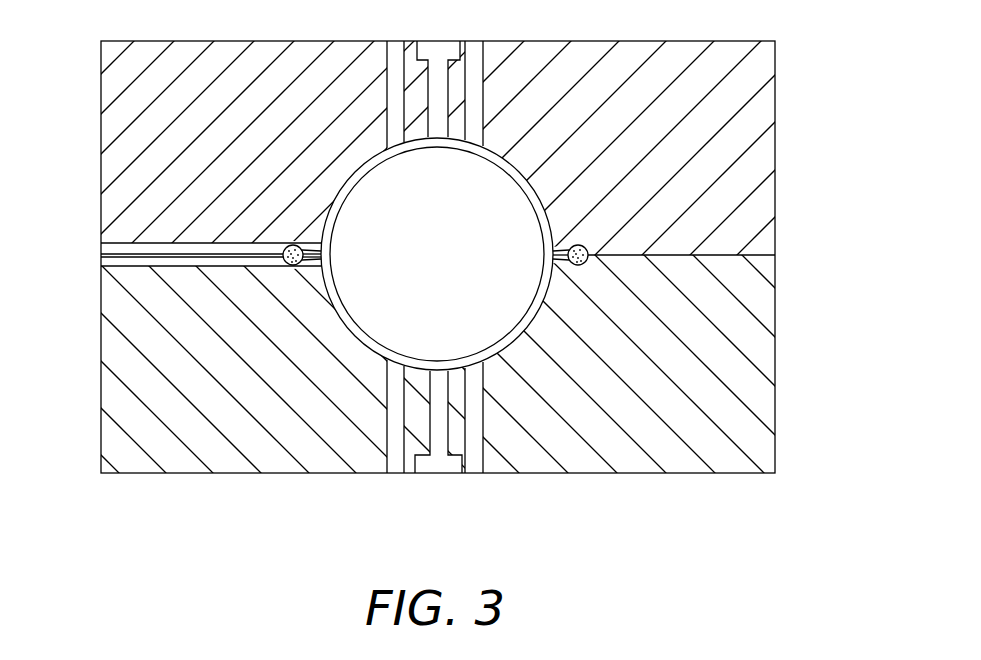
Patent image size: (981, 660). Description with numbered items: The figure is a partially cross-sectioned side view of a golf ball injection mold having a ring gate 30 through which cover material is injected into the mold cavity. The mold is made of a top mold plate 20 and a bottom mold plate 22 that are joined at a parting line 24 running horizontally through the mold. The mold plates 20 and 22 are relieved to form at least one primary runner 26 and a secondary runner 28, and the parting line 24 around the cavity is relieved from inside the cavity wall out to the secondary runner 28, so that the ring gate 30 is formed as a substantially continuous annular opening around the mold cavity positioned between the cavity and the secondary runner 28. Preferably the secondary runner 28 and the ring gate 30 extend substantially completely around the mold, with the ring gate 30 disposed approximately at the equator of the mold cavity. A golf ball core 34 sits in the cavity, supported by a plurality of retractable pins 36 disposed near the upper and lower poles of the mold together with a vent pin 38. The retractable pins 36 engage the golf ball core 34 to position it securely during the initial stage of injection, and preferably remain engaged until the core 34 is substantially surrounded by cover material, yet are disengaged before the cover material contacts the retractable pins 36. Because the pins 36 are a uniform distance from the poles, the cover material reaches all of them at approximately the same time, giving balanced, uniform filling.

The top mold plate 20 is at (107, 58).
The bottom mold plate 22 is at (120, 350).
The parting line 24 is at (715, 257).
The primary runner 26 is at (190, 243).
The secondary runner 28 is at (298, 265).
The ring gate 30 is at (312, 242).
The golf ball core 34 is at (457, 270).
The retractable pins 36 is at (393, 60).
The vent pin 38 is at (437, 50).